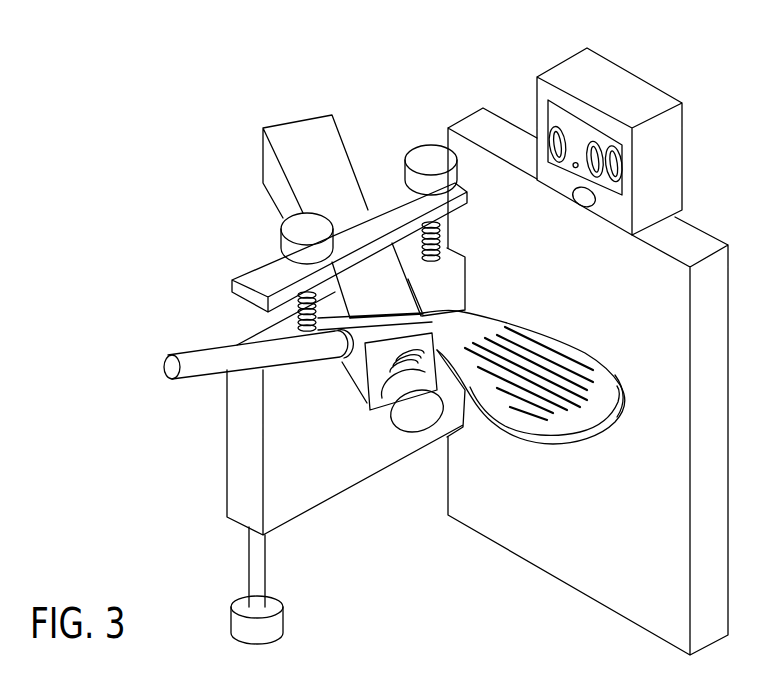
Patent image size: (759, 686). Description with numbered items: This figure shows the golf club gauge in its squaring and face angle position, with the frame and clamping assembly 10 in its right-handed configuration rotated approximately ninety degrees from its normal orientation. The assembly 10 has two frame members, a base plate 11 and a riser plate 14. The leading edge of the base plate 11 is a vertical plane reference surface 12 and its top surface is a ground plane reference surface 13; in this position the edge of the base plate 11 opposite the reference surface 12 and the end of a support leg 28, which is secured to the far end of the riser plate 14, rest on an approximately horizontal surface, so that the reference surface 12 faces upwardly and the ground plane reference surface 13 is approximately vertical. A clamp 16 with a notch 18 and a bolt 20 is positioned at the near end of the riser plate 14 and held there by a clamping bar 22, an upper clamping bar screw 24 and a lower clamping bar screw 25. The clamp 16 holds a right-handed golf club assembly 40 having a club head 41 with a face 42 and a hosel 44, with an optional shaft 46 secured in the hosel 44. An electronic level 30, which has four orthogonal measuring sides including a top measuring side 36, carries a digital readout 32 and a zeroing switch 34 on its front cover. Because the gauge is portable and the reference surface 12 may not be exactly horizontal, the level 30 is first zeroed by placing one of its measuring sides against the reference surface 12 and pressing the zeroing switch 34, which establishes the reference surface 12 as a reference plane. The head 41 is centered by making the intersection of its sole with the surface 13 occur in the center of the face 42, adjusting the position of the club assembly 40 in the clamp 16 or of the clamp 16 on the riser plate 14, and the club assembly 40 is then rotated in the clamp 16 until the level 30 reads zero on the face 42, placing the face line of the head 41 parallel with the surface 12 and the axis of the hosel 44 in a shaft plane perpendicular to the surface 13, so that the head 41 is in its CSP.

The frame and clamping assembly 10 is at (512, 587).
The base plate 11 is at (537, 518).
The vertical plane reference surface 12 is at (693, 250).
The ground plane reference surface 13 is at (682, 397).
The riser plate 14 is at (283, 487).
The clamp 16 is at (305, 140).
The notch 18 is at (357, 368).
The bolt 20 is at (410, 417).
The clamping bar 22 is at (267, 268).
The upper clamping bar screw 24 is at (298, 233).
The lower clamping bar screw 25 is at (427, 160).
The support leg 28 is at (278, 625).
The electronic level 30 is at (569, 67).
The digital readout 32 is at (618, 173).
The zeroing switch 34 is at (583, 202).
The top measuring side 36 is at (627, 101).
The golf club assembly 40 is at (559, 462).
The club head 41 is at (615, 397).
The face 42 is at (600, 423).
The hosel 44 is at (370, 327).
The shaft 46 is at (270, 355).